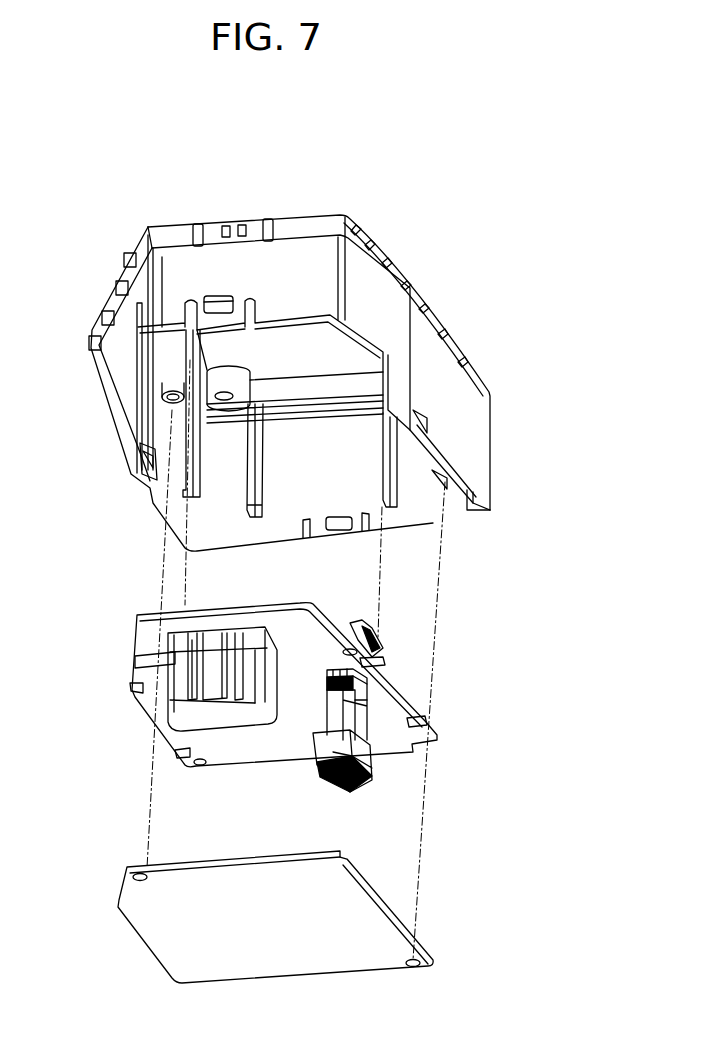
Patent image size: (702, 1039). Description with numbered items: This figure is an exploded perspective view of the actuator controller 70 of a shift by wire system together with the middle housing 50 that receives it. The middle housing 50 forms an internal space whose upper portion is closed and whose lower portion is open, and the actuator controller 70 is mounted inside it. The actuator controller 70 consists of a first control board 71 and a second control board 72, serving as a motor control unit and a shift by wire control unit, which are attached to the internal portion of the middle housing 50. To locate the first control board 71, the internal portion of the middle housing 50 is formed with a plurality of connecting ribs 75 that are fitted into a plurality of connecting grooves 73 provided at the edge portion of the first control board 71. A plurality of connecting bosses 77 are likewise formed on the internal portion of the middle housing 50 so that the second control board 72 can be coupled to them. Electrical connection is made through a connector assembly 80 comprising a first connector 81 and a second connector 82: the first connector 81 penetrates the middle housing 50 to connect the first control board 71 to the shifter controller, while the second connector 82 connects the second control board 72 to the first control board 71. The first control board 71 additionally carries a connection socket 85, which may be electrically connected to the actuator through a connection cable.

The middle housing 50 is at (492, 438).
The actuator controller 70 is at (78, 762).
The first control board 71 is at (165, 745).
The second control board 72 is at (163, 860).
The connecting grooves 73 is at (150, 660).
The connecting ribs 75 is at (195, 462).
The connecting bosses 77 is at (182, 373).
The connector assembly 80 is at (500, 630).
The first connector 81 is at (375, 661).
The second connector 82 is at (378, 782).
The connection socket 85 is at (177, 693).